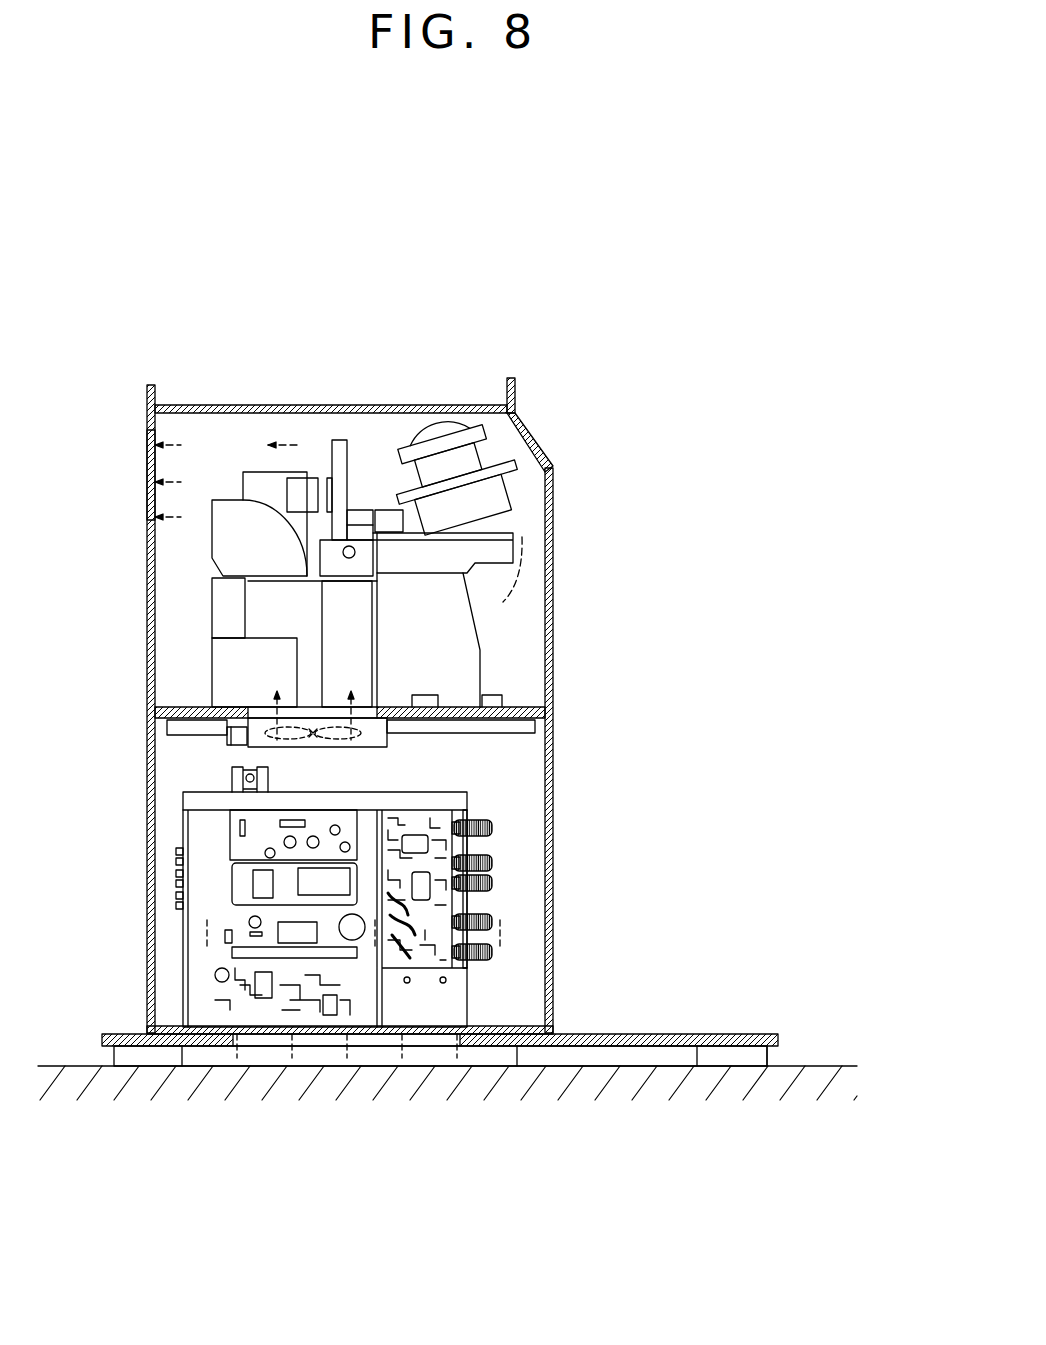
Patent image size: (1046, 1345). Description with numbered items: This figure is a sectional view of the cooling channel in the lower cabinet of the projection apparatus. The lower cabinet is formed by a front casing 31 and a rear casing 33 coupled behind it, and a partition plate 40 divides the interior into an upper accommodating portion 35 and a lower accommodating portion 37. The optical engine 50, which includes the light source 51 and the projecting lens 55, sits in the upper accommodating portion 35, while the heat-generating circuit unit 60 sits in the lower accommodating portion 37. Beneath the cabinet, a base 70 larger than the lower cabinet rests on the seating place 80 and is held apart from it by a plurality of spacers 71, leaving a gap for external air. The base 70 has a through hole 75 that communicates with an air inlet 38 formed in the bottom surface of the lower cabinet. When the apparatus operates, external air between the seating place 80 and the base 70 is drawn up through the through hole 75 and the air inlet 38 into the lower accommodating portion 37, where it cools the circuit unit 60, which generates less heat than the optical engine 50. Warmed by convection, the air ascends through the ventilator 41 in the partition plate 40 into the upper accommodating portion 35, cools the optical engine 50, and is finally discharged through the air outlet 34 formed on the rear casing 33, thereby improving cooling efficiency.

The front casing 31 is at (547, 452).
The rear casing 33 is at (147, 585).
The air outlet 34 is at (147, 463).
The upper accommodating portion 35 is at (519, 638).
The lower accommodating portion 37 is at (518, 802).
The air inlet 38 is at (383, 1034).
The partition plate 40 is at (553, 713).
The ventilator 41 is at (240, 746).
The optical engine 50 is at (485, 612).
The light source 51 is at (217, 670).
The projecting lens 55 is at (500, 492).
The circuit unit 60 is at (513, 897).
The base 70 is at (515, 1047).
The spacers 71 is at (730, 1060).
The through hole 75 is at (237, 1042).
The seating place 80 is at (643, 1092).